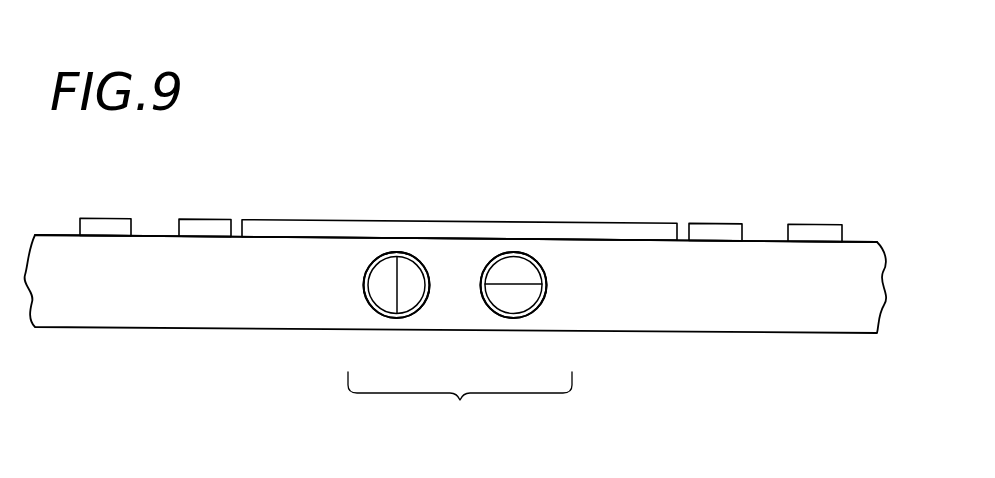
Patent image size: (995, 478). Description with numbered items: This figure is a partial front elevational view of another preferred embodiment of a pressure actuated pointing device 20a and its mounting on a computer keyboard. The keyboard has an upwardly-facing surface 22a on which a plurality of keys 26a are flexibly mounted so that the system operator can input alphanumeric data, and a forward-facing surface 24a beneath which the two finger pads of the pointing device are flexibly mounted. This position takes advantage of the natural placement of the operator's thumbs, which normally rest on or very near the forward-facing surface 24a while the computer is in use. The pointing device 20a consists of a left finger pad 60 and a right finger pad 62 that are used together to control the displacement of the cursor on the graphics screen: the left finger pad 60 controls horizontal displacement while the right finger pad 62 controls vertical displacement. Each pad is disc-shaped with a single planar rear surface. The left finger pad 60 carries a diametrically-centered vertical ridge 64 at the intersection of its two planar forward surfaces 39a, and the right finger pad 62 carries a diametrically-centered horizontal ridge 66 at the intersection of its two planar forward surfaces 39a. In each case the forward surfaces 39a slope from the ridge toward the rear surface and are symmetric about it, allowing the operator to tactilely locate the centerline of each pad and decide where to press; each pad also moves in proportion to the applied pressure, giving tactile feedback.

The pressure actuated pointing device 20a is at (460, 405).
The upwardly-facing surface 22a is at (853, 238).
The forward-facing surface 24a is at (800, 303).
The keys 26a is at (718, 228).
The planar forward surfaces 39a is at (385, 273).
The left finger pad 60 is at (365, 294).
The right finger pad 62 is at (542, 270).
The vertical ridge 64 is at (398, 272).
The horizontal ridge 66 is at (517, 287).